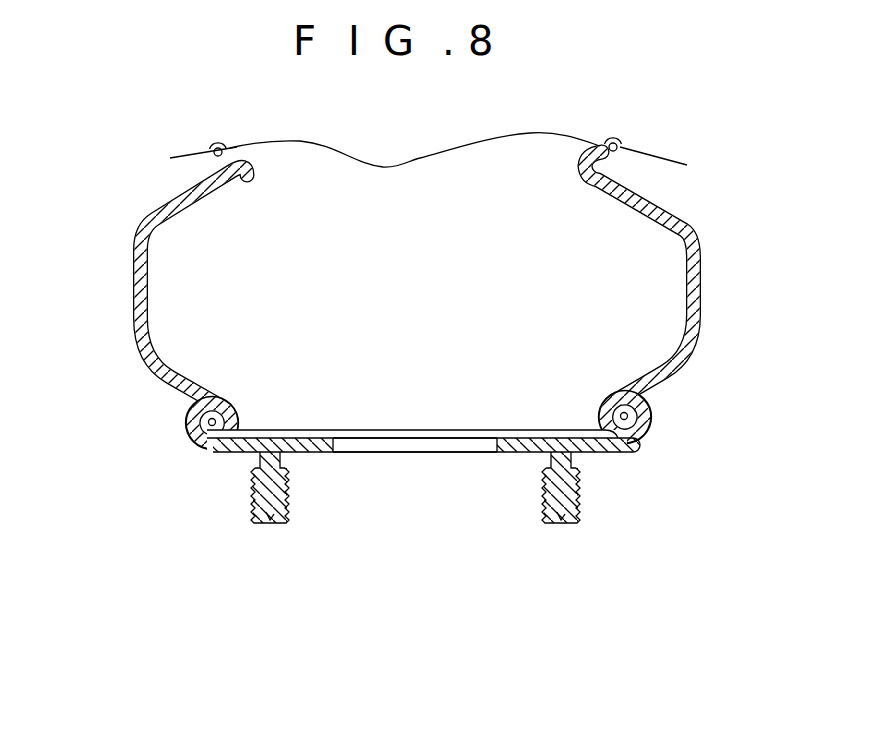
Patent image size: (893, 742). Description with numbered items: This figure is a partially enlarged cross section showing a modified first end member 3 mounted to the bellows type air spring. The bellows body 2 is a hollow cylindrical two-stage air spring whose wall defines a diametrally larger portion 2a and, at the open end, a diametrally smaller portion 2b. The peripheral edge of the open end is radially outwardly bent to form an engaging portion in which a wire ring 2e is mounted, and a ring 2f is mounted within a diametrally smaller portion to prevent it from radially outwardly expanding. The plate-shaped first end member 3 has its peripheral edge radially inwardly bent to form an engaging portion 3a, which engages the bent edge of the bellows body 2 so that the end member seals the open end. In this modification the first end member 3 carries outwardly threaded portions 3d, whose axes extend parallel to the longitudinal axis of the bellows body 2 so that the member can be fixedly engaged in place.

The bellows body 2 is at (428, 301).
The diametrally larger portion 2a is at (705, 283).
The diametrally smaller portion 2b is at (167, 392).
The wire ring 2e is at (650, 405).
The ring 2f is at (622, 157).
The first end member 3 is at (355, 534).
The engaging portion 3a is at (407, 443).
The outwardly threaded portion 3d is at (265, 523).